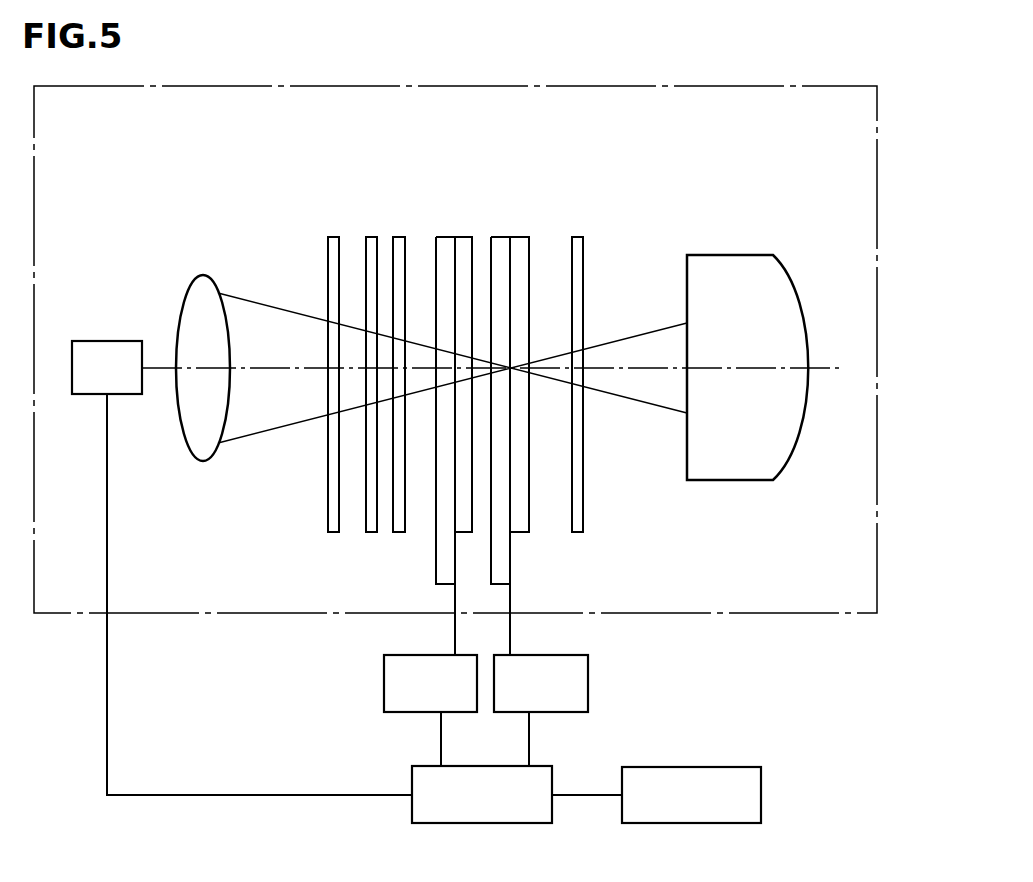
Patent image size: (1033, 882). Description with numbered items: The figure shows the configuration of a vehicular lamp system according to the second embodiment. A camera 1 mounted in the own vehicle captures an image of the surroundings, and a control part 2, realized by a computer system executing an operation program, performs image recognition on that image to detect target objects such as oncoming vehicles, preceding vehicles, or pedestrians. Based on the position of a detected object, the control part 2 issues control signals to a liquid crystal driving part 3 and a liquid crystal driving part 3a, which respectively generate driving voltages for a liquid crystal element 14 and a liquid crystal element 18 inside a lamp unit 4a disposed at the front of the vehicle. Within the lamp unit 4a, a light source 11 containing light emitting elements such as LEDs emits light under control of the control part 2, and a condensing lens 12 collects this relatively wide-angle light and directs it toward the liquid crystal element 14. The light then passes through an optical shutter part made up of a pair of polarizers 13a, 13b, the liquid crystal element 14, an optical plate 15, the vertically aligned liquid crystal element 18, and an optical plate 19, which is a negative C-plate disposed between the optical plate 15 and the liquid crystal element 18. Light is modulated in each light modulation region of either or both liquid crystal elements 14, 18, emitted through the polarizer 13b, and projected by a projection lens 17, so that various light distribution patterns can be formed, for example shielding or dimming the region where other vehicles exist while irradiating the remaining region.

The camera 1 is at (737, 766).
The control part 2 is at (552, 766).
The liquid crystal driving part 3 is at (588, 683).
The liquid crystal driving part 3a is at (384, 683).
The lamp unit 4a is at (845, 613).
The light source 11 is at (107, 341).
The condensing lens 12 is at (203, 276).
The polarizer 13a is at (333, 237).
The polarizer 13b is at (577, 237).
The liquid crystal element 14 is at (510, 237).
The optical plate 15 is at (371, 237).
The projection lens 17 is at (720, 255).
The liquid crystal element 18 is at (455, 237).
The optical plate 19 is at (400, 237).